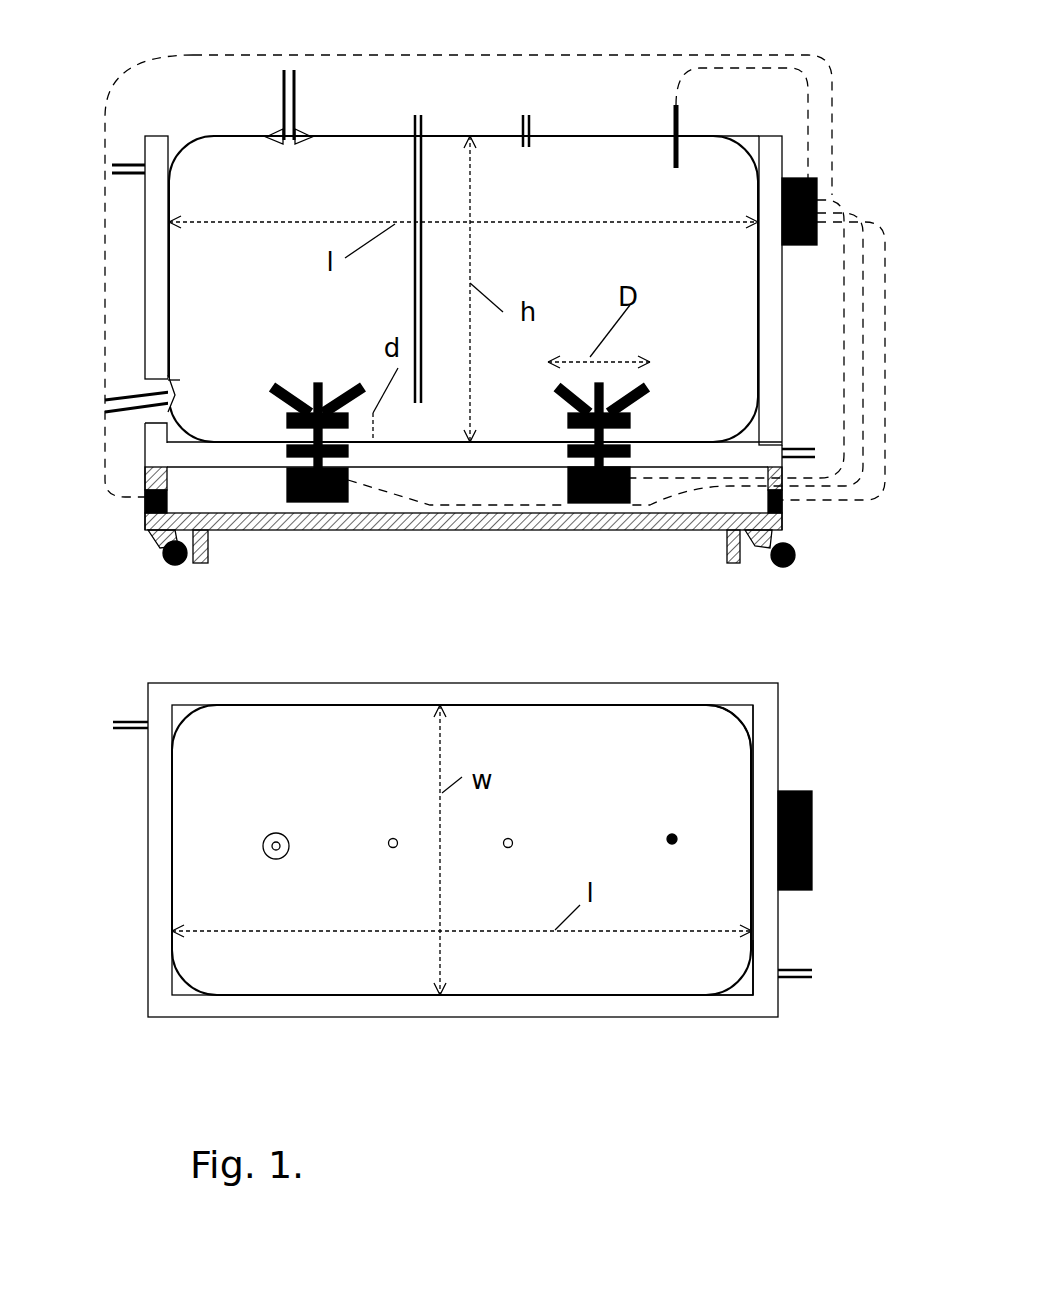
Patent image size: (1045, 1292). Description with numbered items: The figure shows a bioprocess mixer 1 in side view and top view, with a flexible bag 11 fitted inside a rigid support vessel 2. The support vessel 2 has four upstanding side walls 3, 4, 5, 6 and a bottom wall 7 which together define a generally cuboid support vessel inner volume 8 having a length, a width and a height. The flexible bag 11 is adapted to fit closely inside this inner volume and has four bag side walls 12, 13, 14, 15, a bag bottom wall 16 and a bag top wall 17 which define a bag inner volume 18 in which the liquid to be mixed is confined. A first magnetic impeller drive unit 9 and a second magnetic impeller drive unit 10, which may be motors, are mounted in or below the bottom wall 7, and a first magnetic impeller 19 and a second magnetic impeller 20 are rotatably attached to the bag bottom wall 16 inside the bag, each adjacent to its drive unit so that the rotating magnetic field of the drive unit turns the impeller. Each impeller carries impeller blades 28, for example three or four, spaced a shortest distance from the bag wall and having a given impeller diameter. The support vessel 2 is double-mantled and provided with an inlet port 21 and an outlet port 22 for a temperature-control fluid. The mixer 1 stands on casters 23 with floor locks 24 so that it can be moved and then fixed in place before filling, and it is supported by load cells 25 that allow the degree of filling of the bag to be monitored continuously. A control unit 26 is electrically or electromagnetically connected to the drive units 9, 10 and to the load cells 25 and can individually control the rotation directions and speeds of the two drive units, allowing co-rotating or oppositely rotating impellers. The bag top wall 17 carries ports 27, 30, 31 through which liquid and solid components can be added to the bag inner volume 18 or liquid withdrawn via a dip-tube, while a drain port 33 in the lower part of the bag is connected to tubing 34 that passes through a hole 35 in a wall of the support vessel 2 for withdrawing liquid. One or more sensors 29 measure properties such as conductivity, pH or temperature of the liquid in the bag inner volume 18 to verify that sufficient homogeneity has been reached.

The bioprocess mixer 1 is at (128, 628).
The support vessel 2 is at (145, 335).
The side wall 3 is at (168, 152).
The side wall 4 is at (760, 150).
The side wall 5 is at (735, 705).
The side wall 6 is at (733, 995).
The bottom wall 7 is at (743, 443).
The support vessel inner volume 8 is at (282, 581).
The first magnetic impeller drive unit 9 is at (298, 503).
The second magnetic impeller drive unit 10 is at (578, 500).
The flexible bag 11 is at (737, 140).
The bag side wall 12 is at (168, 265).
The bag side wall 13 is at (760, 312).
The bag side wall 14 is at (635, 705).
The bag side wall 15 is at (527, 995).
The bag bottom wall 16 is at (485, 445).
The bag top wall 17 is at (600, 135).
The bag inner volume 18 is at (575, 533).
The first magnetic impeller 19 is at (287, 420).
The second magnetic impeller 20 is at (630, 420).
The inlet port 21 is at (815, 457).
The outlet port 22 is at (115, 168).
The casters 23 is at (165, 548).
The floor locks 24 is at (200, 563).
The load cells 25 is at (148, 492).
The control unit 26 is at (820, 188).
The port 27 is at (283, 125).
The impeller blades 28 is at (317, 397).
The sensors 29 is at (700, 138).
The port 30 is at (415, 122).
The port 31 is at (523, 122).
The drain port 33 is at (173, 395).
The tubing 34 is at (104, 406).
The hole 35 is at (157, 415).